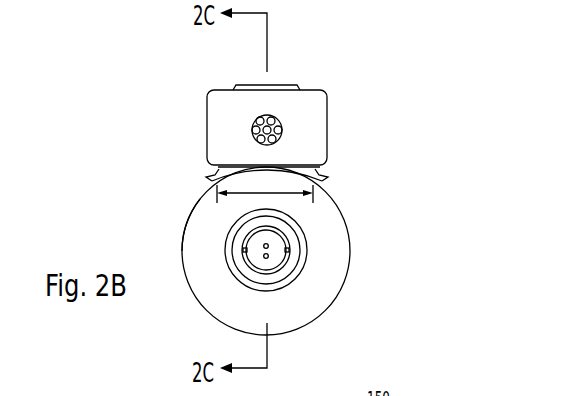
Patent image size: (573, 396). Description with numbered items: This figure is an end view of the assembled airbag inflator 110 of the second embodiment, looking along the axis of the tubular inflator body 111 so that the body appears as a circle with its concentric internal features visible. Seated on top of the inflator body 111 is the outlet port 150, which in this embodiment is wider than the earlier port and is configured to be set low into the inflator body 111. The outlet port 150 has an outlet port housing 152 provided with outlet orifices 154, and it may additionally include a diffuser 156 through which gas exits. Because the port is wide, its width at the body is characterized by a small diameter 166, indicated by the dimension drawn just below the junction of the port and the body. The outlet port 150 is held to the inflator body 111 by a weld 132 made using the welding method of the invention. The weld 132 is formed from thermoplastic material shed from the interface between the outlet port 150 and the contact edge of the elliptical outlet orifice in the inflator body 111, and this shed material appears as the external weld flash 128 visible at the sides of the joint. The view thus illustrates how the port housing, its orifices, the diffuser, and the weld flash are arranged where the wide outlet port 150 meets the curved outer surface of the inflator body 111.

The inflator 110 is at (350, 308).
The inflator body 111 is at (168, 228).
The external weld flash 128 is at (213, 178).
The weld 132 is at (320, 181).
The outlet port 150 is at (326, 93).
The outlet port housing 152 is at (318, 104).
The outlet orifices 154 is at (284, 128).
The diffuser 156 is at (262, 116).
The small diameter 166 is at (295, 197).